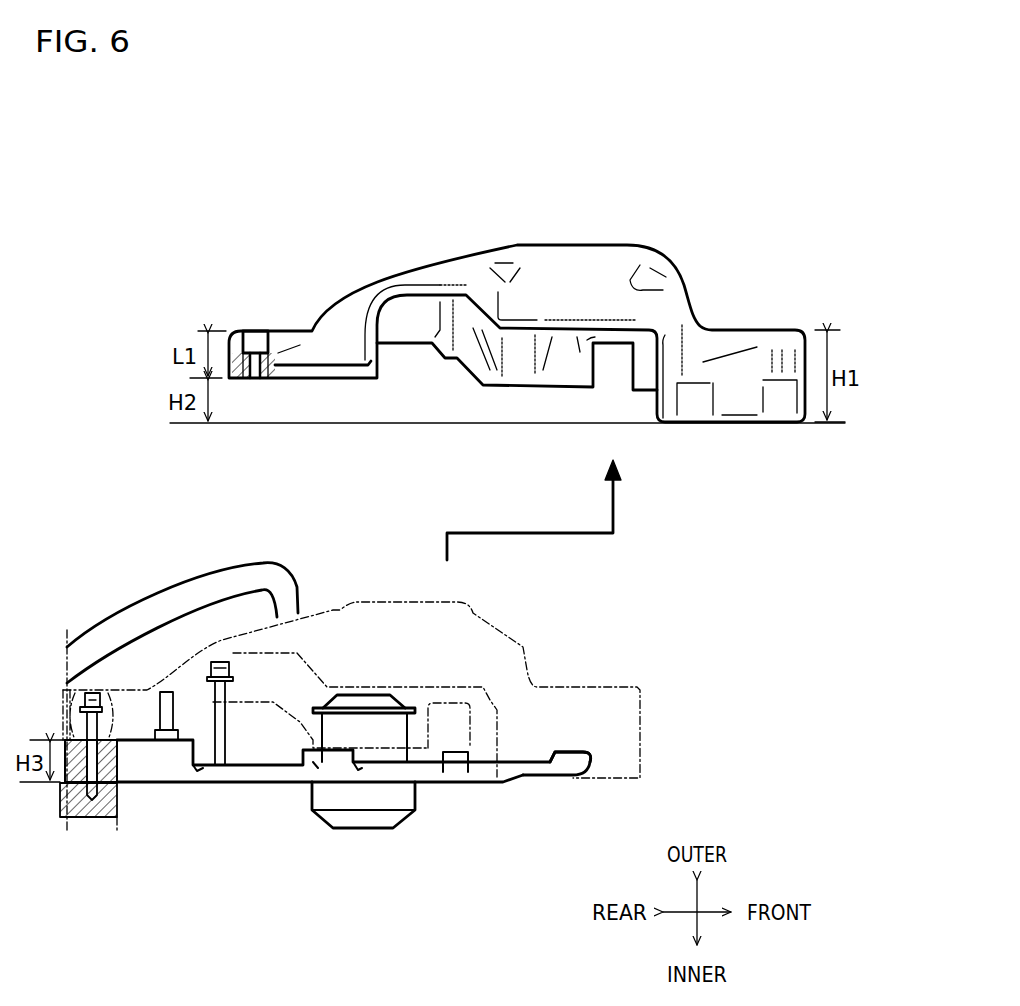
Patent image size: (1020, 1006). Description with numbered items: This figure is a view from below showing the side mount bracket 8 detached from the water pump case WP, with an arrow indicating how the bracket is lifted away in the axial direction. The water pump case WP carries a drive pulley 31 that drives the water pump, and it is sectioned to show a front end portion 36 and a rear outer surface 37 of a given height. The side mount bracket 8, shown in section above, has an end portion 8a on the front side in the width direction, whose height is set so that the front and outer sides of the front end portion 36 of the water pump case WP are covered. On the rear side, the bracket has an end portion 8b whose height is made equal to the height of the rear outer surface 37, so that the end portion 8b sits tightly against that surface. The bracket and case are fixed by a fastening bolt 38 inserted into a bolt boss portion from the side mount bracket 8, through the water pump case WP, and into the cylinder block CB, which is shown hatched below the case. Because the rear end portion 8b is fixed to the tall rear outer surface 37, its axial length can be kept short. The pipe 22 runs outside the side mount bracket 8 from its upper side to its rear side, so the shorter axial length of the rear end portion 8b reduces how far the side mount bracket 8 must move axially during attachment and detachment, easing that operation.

The side mount bracket 8 is at (322, 237).
The end portion 8a is at (786, 328).
The end portion 8b is at (255, 330).
The pipe 22 is at (153, 607).
The drive pulley 31 is at (400, 732).
The front end portion 36 is at (580, 738).
The outer surface 37 is at (65, 717).
The fastening bolt 38 is at (103, 720).
The cylinder block CB is at (118, 803).
The water pump case WP is at (233, 795).